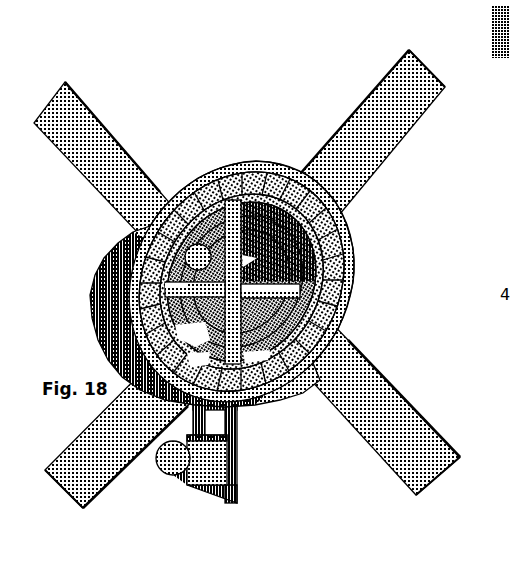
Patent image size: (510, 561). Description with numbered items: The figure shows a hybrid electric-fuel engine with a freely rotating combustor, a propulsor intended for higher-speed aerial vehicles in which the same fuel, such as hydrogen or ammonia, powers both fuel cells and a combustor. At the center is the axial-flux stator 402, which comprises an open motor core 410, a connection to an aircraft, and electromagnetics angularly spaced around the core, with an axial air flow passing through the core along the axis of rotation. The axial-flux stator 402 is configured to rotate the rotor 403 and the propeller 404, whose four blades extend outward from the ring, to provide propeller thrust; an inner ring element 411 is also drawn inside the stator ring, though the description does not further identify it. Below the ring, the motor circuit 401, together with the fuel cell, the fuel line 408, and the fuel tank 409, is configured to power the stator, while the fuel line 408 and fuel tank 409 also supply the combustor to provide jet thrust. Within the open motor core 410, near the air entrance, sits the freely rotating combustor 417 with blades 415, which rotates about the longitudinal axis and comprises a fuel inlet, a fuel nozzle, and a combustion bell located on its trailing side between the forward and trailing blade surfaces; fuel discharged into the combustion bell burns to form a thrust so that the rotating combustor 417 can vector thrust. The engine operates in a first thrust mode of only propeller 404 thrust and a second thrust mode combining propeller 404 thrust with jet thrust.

The motor circuit 401 is at (207, 423).
The axial-flux stator 402 is at (352, 272).
The rotor 403 is at (352, 247).
The propeller 404 is at (388, 146).
The fuel line 408 is at (238, 467).
The fuel tank 409 is at (162, 470).
The open motor core 410 is at (268, 208).
The inner ring 411 is at (345, 305).
The blades 415 is at (182, 281).
The freely rotating combustor 417 is at (201, 246).